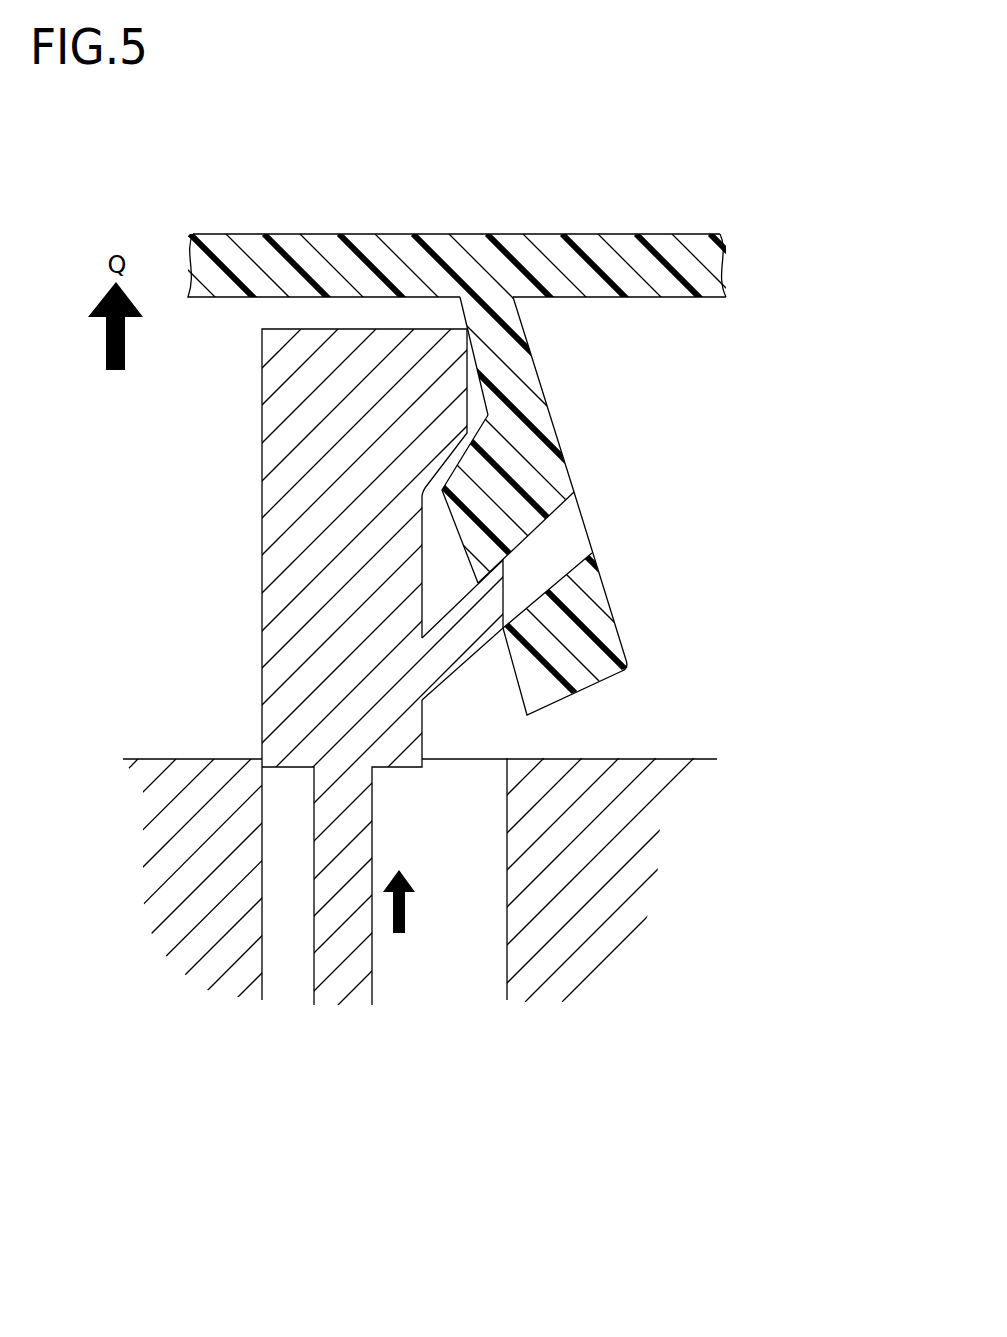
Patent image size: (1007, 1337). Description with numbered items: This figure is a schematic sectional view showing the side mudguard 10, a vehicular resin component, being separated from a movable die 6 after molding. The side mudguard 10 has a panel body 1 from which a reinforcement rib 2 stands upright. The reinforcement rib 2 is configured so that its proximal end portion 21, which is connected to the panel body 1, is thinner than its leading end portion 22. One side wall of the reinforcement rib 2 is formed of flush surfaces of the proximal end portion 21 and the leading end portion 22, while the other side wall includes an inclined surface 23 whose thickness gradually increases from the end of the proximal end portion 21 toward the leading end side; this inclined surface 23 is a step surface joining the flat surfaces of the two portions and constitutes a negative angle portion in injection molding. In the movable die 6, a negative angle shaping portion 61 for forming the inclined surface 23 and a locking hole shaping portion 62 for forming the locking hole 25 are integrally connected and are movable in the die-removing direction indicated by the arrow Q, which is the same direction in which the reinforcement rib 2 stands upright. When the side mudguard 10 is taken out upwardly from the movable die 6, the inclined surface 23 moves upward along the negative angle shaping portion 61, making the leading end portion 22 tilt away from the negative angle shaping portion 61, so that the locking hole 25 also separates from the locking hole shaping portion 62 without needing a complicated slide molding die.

The side mudguard 10 is at (616, 226).
The panel body 1 is at (519, 243).
The reinforcement rib 2 is at (550, 433).
The proximal end portion 21 is at (518, 367).
The leading end portion 22 is at (597, 627).
The locking hole 25 is at (565, 557).
The inclined surface 23 is at (460, 463).
The movable die 6 is at (632, 765).
The negative angle shaping portion 61 is at (355, 447).
The locking hole shaping portion 62 is at (452, 648).